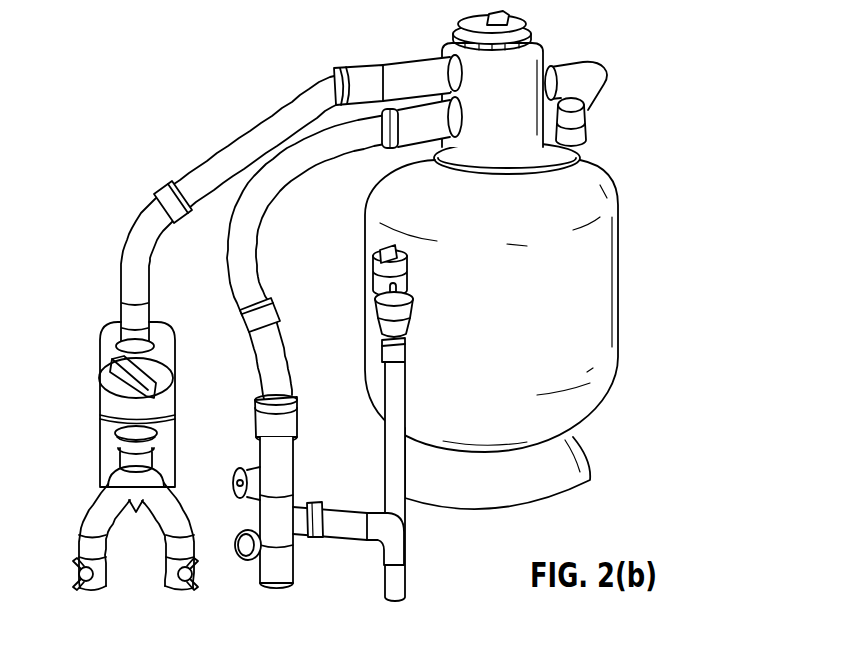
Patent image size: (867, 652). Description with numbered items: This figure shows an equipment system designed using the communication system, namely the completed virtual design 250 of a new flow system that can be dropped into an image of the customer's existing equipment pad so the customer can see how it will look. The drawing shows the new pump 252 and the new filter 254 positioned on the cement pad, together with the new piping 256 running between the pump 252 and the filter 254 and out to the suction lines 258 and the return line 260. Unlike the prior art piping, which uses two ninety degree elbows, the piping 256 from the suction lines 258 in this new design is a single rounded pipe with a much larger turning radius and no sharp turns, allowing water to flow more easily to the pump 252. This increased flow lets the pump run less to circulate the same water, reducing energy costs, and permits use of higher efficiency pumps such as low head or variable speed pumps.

The virtual design 250 is at (384, 315).
The pump 252 is at (100, 350).
The filter 254 is at (618, 323).
The hoses 256 is at (195, 148).
The suction lines 258 is at (173, 588).
The return line 260 is at (297, 560).